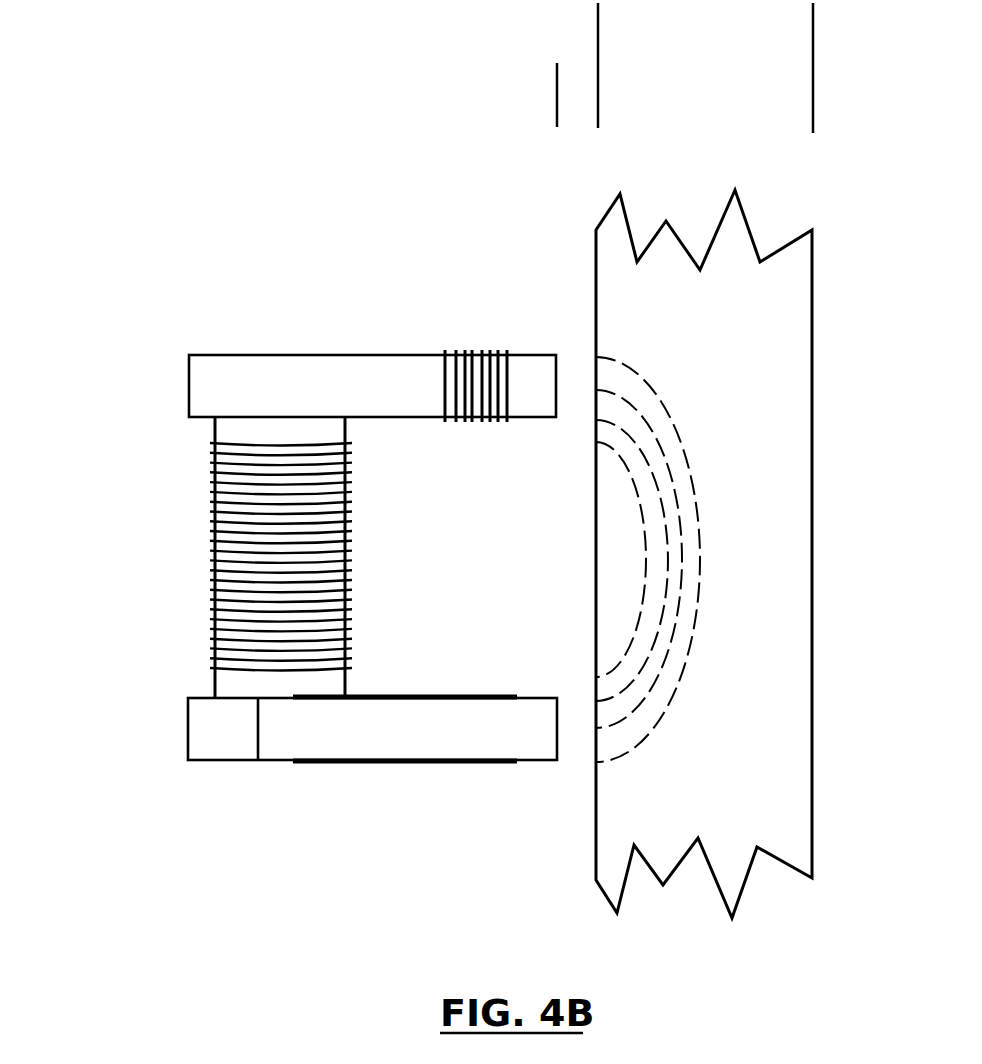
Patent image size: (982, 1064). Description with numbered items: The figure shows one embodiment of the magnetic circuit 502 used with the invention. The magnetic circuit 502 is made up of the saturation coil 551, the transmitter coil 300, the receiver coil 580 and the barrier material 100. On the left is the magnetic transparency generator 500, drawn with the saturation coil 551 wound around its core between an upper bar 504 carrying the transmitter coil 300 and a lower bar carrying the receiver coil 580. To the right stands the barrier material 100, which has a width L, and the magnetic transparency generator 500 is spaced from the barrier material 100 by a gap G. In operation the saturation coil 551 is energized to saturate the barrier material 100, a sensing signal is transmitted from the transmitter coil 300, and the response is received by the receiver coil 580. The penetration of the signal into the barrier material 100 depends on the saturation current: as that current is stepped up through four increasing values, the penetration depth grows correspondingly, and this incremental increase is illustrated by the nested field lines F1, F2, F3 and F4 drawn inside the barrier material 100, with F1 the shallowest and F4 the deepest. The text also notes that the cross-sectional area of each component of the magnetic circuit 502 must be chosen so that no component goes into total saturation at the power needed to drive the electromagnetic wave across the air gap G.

The barrier material 100 is at (813, 345).
The transmitter coil 300 is at (467, 355).
The magnetic transparency generator 500 is at (292, 555).
The magnetic circuit 502 is at (168, 470).
The top bar 504 is at (297, 355).
The saturation coil 551 is at (213, 562).
The receiver coil 580 is at (343, 764).
The field line F1 is at (630, 655).
The field line F2 is at (668, 585).
The field line F3 is at (675, 473).
The field line F4 is at (672, 402).
The gap G is at (557, 90).
The width L is at (813, 31).